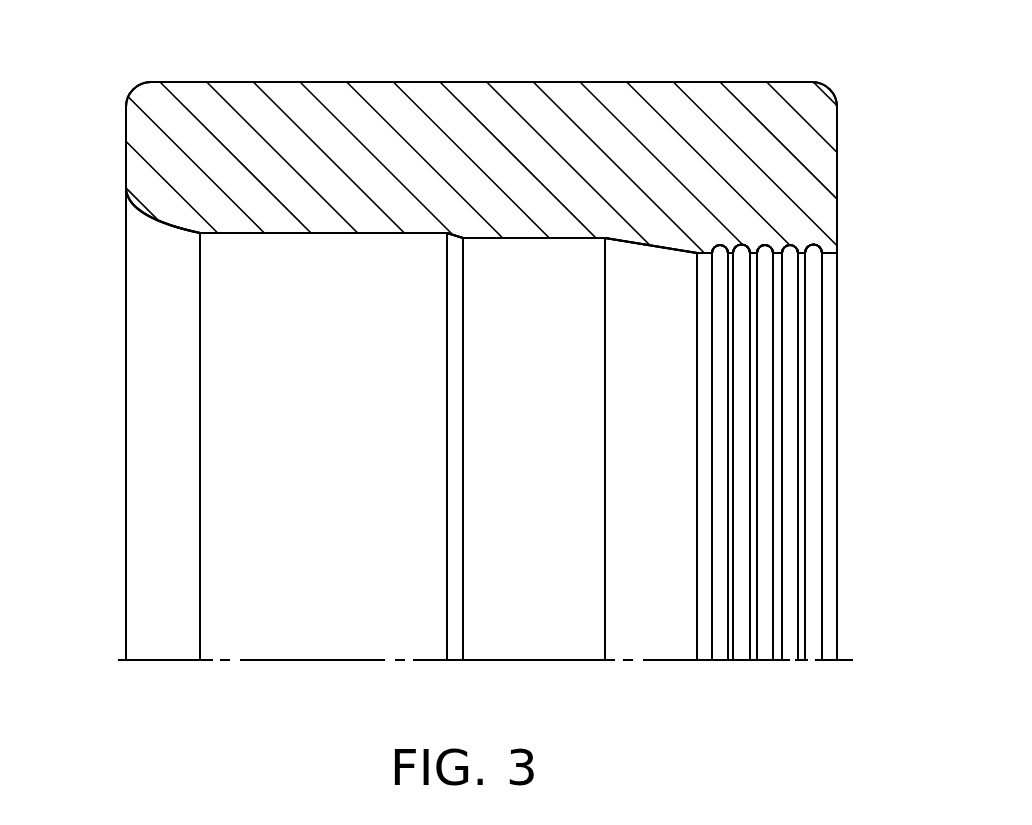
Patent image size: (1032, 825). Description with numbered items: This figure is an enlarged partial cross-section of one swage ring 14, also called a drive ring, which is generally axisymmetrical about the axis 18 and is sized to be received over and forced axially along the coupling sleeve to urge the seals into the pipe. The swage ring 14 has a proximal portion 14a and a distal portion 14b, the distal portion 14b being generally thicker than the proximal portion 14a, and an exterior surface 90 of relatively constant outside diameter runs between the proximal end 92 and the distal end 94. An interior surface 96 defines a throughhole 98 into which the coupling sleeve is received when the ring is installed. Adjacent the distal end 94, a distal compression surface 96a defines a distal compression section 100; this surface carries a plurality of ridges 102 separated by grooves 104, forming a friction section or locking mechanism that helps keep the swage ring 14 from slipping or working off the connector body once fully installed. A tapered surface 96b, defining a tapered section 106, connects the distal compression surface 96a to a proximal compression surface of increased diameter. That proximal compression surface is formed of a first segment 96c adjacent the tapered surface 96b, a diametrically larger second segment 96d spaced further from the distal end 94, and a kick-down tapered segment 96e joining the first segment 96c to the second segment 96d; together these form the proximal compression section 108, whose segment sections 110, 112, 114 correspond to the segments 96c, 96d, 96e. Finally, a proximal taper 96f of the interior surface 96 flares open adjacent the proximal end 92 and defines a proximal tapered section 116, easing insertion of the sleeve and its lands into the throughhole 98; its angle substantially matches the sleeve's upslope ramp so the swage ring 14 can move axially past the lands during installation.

The swage ring 14 is at (562, 65).
The proximal portion 14a is at (273, 163).
The distal portion 14b is at (712, 182).
The axis 18 is at (250, 658).
The exterior surface 90 is at (423, 81).
The proximal end 92 is at (126, 123).
The distal end 94 is at (839, 172).
The interior surface 96 is at (317, 237).
The distal compression surface 96a is at (782, 253).
The tapered surface 96b is at (628, 242).
The first segment 96c is at (513, 238).
The second segment 96d is at (368, 233).
The kick-down tapered segment 96e is at (452, 236).
The proximal taper 96f is at (173, 226).
The throughhole 98 is at (157, 455).
The distal compression section 100 is at (768, 638).
The ridges 102 is at (745, 252).
The grooves 104 is at (750, 252).
The tapered section 106 is at (653, 617).
The proximal compression section 108 is at (378, 615).
The segment section 110 is at (555, 618).
The segment section 112 is at (302, 630).
The segment section 114 is at (450, 648).
The proximal tapered section 116 is at (168, 625).